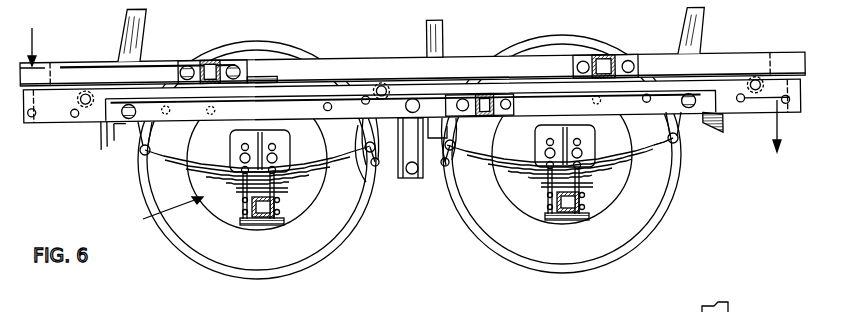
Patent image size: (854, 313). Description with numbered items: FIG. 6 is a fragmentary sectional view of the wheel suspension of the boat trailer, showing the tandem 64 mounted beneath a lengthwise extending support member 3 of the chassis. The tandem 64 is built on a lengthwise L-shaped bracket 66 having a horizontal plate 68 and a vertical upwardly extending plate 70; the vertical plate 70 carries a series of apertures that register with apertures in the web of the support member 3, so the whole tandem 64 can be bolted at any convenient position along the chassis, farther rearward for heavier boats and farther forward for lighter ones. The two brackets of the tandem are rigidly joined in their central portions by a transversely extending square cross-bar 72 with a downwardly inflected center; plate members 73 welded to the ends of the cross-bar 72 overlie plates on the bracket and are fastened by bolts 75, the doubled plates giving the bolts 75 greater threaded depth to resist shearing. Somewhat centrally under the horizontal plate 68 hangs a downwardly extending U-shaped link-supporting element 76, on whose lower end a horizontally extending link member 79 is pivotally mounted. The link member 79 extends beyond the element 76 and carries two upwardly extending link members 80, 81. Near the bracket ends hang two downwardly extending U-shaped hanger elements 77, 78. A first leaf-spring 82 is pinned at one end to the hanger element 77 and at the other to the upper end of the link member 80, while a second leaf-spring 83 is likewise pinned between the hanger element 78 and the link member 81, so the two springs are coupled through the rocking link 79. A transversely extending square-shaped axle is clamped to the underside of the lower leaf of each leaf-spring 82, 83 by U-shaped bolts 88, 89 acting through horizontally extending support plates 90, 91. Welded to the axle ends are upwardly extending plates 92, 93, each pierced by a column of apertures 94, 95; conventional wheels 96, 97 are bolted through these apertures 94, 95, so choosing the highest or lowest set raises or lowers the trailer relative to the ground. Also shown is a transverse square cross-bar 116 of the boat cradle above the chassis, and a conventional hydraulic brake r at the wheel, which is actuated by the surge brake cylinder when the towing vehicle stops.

The lengthwise extending support member 3 is at (745, 110).
The tandem 64 is at (412, 180).
The L-shaped bracket 66 is at (137, 123).
The horizontal plate 68 is at (670, 155).
The vertical upwardly extending plate 70 is at (708, 115).
The cross-bar 72 is at (480, 101).
The plate members 73 is at (505, 104).
The bolts 75 is at (512, 106).
The link-supporting element 76 is at (420, 165).
The hanger element 77 is at (143, 152).
The hanger element 78 is at (683, 130).
The link member 79 is at (374, 170).
The upwardly extending link member 80 is at (358, 185).
The upwardly extending link member 81 is at (455, 168).
The leaf-spring 82 is at (282, 200).
The leaf-spring 83 is at (603, 177).
The U-shaped bolt 88 is at (248, 206).
The U-shaped bolt 89 is at (593, 226).
The support plate 90 is at (262, 222).
The support plate 91 is at (536, 215).
The upwardly extending plate 92 is at (275, 143).
The upwardly extending plate 93 is at (600, 62).
The apertures 94 is at (243, 143).
The apertures 95 is at (603, 85).
The wheel 96 is at (338, 246).
The wheel 97 is at (663, 212).
The cross-bar 116 is at (191, 66).
The hydraulic brake r is at (138, 229).